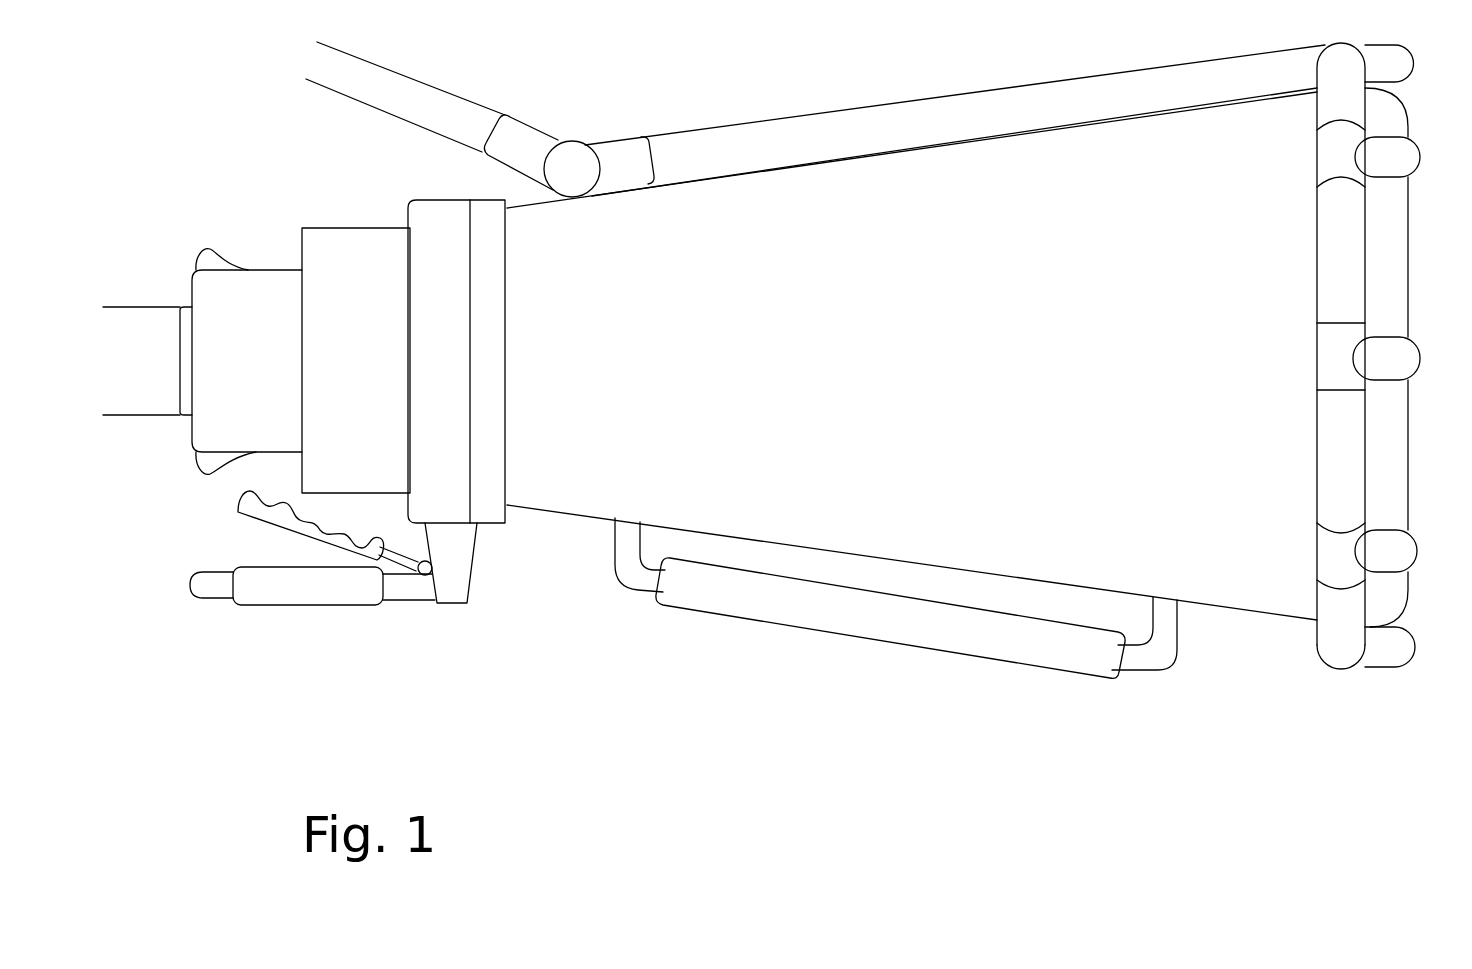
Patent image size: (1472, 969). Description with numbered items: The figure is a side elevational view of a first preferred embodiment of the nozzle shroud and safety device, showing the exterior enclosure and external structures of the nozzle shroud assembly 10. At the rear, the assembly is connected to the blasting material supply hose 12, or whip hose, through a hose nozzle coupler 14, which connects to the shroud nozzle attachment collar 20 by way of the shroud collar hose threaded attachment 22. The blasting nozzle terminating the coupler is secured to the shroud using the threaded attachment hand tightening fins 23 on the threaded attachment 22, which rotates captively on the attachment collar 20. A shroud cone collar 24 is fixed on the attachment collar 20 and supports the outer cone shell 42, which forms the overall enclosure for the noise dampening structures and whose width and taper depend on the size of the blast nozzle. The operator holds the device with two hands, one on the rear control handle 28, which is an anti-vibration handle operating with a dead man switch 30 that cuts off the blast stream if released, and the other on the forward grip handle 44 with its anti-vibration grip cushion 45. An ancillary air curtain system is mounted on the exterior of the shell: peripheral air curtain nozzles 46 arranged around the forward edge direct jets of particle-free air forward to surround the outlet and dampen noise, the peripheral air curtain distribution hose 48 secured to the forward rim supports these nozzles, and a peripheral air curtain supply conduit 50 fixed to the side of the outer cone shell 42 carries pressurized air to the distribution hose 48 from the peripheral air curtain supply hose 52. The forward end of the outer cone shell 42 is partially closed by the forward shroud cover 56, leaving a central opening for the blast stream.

The nozzle shroud assembly 10 is at (462, 656).
The blasting material supply hose 12 is at (122, 307).
The hose nozzle coupler 14 is at (190, 421).
The shroud nozzle attachment collar 20 is at (383, 228).
The shroud collar hose threaded attachment 22 is at (272, 455).
The threaded attachment hand tightening fins 23 is at (208, 243).
The shroud cone collar 24 is at (445, 200).
The rear control handle 28 is at (208, 602).
The dead man switch 30 is at (258, 530).
The outer cone shell 42 is at (692, 369).
The forward grip handle 44 is at (645, 595).
The anti-vibration grip cushion 45 is at (968, 657).
The peripheral air curtain nozzles 46 is at (1380, 668).
The peripheral air curtain distribution hose 48 is at (1340, 670).
The peripheral air curtain supply conduit 50 is at (686, 158).
The peripheral air curtain supply hose 52 is at (330, 90).
The forward shroud cover 56 is at (1408, 438).